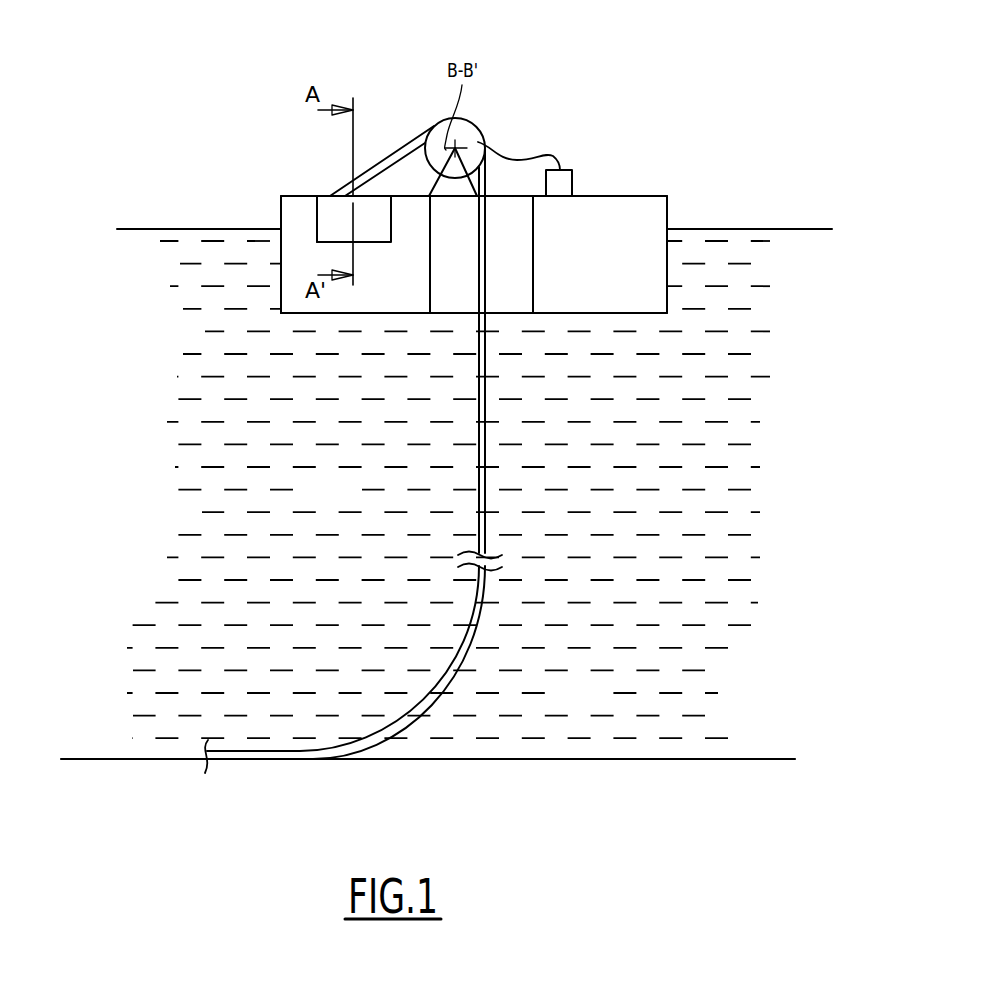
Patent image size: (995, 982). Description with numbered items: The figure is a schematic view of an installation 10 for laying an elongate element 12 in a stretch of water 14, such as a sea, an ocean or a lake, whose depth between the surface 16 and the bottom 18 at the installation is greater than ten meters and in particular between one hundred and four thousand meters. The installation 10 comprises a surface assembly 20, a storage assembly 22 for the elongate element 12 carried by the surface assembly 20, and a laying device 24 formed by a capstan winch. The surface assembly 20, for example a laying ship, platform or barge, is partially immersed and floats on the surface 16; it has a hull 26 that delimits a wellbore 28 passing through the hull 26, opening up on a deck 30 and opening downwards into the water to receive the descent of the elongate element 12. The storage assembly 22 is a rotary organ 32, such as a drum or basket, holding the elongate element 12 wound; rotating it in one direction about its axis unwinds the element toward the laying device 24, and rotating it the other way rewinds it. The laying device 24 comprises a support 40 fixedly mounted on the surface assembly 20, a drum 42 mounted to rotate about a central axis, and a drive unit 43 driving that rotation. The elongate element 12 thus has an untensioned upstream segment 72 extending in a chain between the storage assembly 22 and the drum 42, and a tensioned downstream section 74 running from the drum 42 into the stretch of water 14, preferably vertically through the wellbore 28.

The installation 10 is at (600, 57).
The elongate element 12 is at (348, 156).
The stretch of water 14 is at (448, 489).
The surface 16 is at (735, 228).
The bottom 18 is at (618, 759).
The surface assembly 20 is at (268, 283).
The storage assembly 22 is at (376, 255).
The laying device 24 is at (503, 127).
The hull 26 is at (332, 313).
The wellbore 28 is at (533, 283).
The deck 30 is at (630, 196).
The rotary organ 32 is at (317, 220).
The support 40 is at (433, 183).
The drum 42 is at (444, 138).
The drive unit 43 is at (560, 184).
The untensioned upstream segment 72 is at (388, 160).
The tensioned downstream section 74 is at (478, 380).